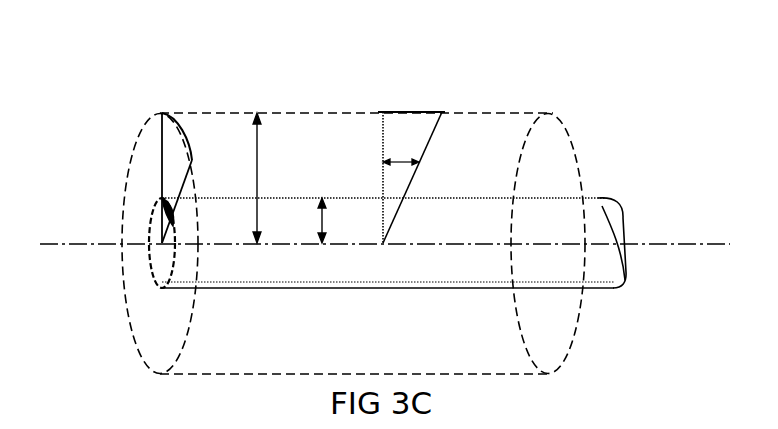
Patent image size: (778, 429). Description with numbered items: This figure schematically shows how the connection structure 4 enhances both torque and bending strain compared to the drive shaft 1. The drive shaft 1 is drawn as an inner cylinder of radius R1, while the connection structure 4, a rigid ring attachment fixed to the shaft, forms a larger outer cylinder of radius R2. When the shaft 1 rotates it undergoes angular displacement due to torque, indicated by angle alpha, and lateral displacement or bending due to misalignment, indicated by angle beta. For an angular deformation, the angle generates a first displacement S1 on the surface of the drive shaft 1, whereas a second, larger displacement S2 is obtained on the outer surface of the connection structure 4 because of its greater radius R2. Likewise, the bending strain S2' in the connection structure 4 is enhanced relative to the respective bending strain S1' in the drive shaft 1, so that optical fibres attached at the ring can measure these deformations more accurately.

The drive shaft 1 is at (597, 198).
The connection structure 4 is at (572, 132).
The first displacement S1 is at (199, 195).
The second displacement S2 is at (203, 140).
The bending strain in the drive shaft S1' is at (454, 131).
The bending strain in the connection structure S2' is at (412, 132).
The shaft radius R1 is at (339, 220).
The ring attachment radius R2 is at (275, 178).